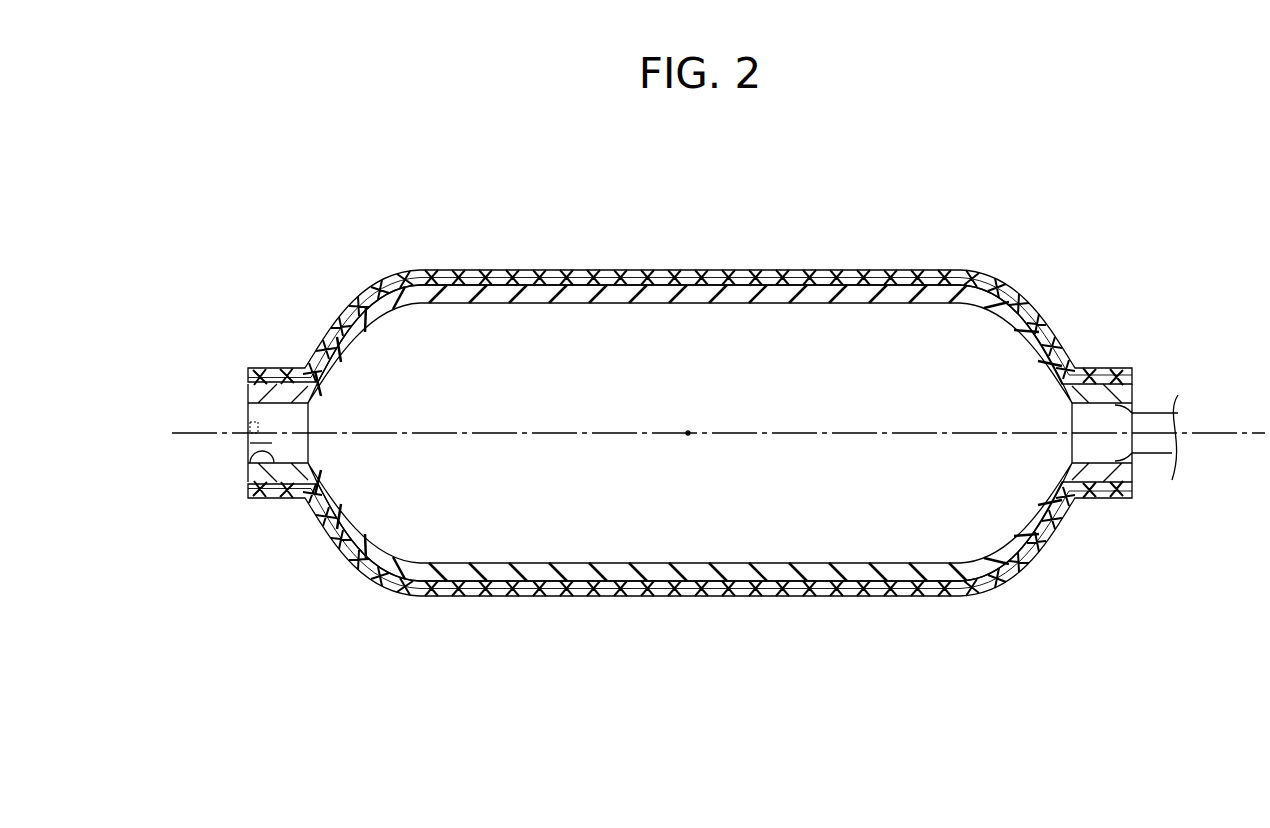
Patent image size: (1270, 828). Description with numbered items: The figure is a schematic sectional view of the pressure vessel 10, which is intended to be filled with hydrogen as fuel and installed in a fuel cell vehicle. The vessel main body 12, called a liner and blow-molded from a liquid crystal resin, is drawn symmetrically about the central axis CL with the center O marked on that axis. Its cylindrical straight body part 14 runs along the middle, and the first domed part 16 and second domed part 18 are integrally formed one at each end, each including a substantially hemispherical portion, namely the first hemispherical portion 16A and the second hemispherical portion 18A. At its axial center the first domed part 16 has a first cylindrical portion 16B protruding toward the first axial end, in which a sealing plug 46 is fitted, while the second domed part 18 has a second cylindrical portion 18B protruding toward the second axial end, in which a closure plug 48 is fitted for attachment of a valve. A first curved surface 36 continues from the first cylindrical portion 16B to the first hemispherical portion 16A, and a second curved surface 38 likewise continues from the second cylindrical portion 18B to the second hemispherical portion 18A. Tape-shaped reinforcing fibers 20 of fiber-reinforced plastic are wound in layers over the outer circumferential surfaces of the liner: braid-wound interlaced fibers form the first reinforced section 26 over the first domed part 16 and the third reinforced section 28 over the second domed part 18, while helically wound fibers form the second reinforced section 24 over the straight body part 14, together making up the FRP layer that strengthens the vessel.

The pressure vessel 10 is at (908, 232).
The vessel main body 12 is at (683, 305).
The straight body part 14 is at (690, 561).
The first domed part 16 is at (378, 535).
The first hemispherical portion 16A is at (432, 547).
The first cylindrical portion 16B is at (247, 452).
The second domed part 18 is at (1000, 540).
The second hemispherical portion 18A is at (1003, 547).
The second cylindrical portion 18B is at (1133, 410).
The reinforcing fibers 20 is at (345, 310).
The second reinforced section 24 is at (688, 598).
The first reinforced section 26 is at (350, 572).
The third reinforced section 28 is at (1010, 590).
The first curved surface 36 is at (328, 395).
The second curved surface 38 is at (1052, 386).
The sealing plug 46 is at (247, 445).
The closure plug 48 is at (1132, 458).
The central axis CL is at (188, 430).
The center O is at (688, 435).